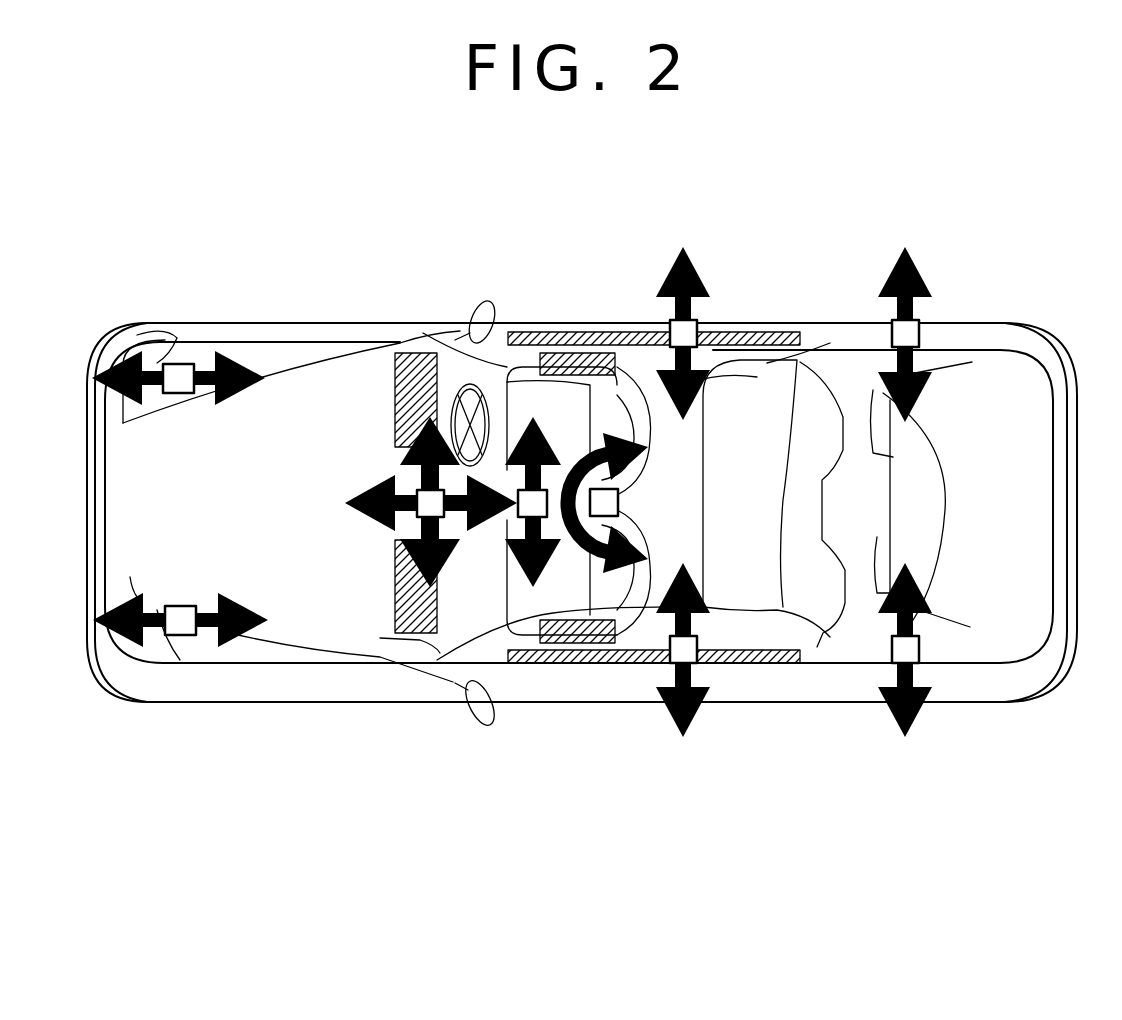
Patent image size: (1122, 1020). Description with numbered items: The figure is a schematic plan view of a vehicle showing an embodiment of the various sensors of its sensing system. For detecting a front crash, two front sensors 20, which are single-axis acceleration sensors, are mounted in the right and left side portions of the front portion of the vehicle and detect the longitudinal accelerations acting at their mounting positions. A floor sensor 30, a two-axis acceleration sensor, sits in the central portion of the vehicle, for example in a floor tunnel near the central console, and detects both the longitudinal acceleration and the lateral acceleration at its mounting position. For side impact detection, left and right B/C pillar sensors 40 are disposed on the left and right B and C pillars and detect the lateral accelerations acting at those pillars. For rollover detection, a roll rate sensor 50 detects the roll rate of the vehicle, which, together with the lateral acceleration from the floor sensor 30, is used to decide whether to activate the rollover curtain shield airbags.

The front sensor 20 is at (181, 378).
The floor sensor 30 is at (435, 515).
The B/C pillar sensor 40 is at (683, 335).
The roll rate sensor 50 is at (604, 505).